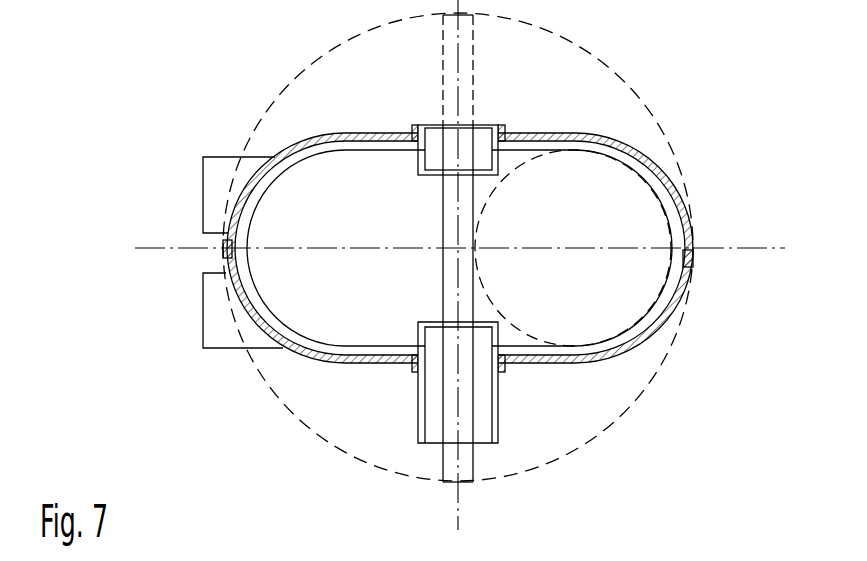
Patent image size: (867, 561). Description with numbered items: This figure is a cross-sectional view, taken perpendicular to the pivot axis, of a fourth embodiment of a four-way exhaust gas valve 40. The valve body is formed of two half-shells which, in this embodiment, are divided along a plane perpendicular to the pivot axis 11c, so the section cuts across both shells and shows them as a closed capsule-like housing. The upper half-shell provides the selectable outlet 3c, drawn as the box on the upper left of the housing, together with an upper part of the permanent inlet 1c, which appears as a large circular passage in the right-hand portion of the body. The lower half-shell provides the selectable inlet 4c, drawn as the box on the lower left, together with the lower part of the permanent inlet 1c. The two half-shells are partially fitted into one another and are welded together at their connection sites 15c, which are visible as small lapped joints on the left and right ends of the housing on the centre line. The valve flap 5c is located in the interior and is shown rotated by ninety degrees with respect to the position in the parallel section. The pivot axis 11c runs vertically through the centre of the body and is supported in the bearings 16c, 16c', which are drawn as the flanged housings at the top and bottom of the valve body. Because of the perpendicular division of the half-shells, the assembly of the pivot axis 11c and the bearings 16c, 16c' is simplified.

The four-way exhaust gas valve 40 is at (240, 124).
The selectable outlet 3c is at (203, 205).
The selectable inlet 4c is at (203, 327).
The connection site 15c is at (224, 256).
The valve flap 5c is at (361, 216).
The bearing 16c is at (455, 125).
The bearing 16c' is at (435, 382).
The permanent inlet 1c is at (511, 162).
The pivot axis 11c is at (475, 460).